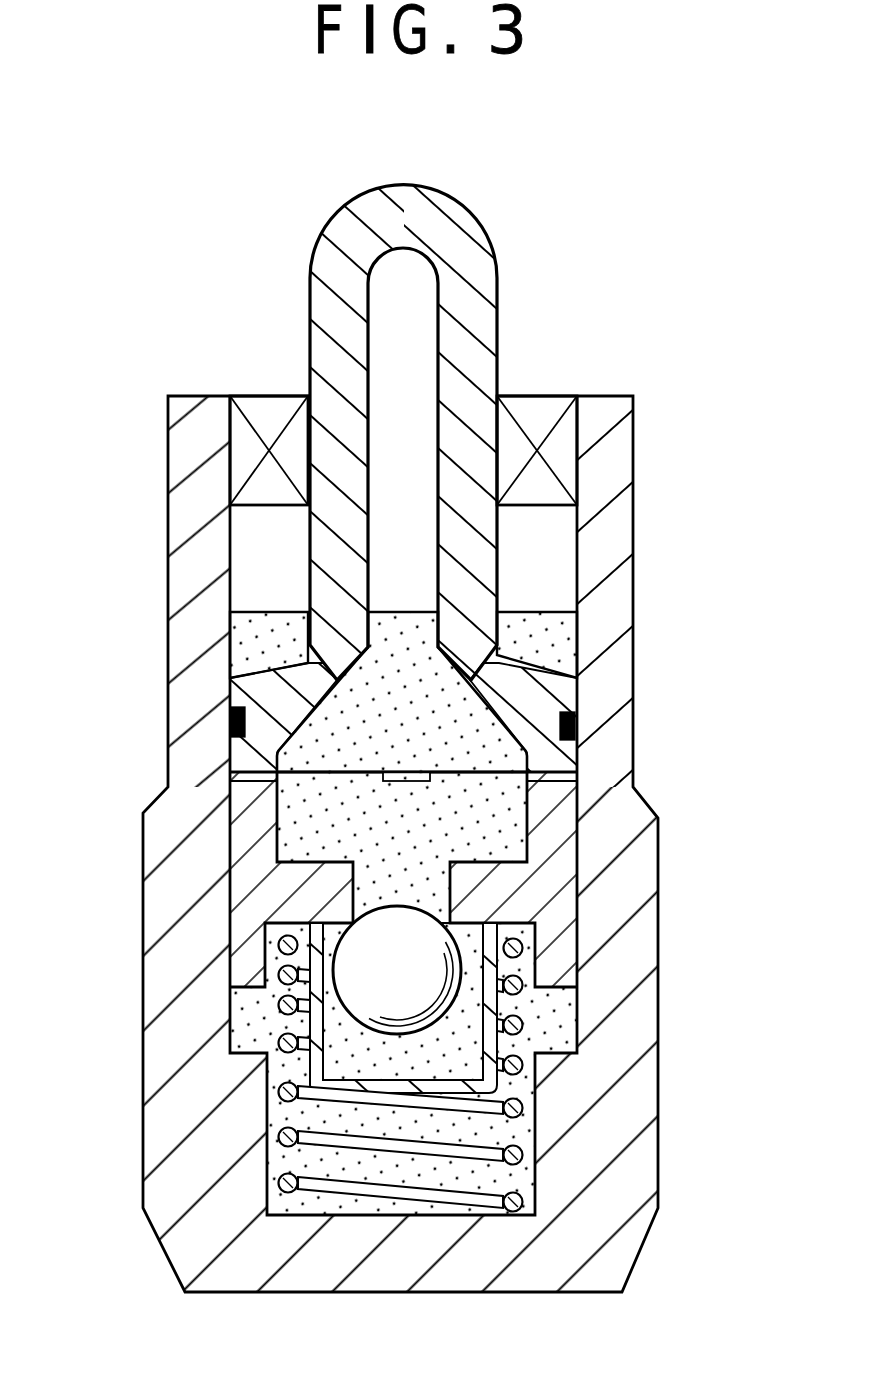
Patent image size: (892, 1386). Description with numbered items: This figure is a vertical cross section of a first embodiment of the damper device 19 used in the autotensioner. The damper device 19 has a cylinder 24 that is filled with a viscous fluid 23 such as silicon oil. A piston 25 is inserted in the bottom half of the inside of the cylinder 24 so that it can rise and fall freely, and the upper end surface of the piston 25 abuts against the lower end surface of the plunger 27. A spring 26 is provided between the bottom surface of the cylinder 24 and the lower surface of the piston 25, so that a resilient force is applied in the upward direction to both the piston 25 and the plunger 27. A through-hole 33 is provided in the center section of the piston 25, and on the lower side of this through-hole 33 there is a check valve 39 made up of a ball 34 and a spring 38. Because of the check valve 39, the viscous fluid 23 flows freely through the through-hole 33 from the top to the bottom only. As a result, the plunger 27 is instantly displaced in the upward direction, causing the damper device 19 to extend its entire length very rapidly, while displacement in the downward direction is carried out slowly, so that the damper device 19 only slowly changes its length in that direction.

The damper device 19 is at (712, 918).
The viscous fluid 23 is at (242, 652).
The cylinder 24 is at (618, 725).
The piston 25 is at (550, 837).
The spring 26 is at (525, 1015).
The plunger 27 is at (483, 273).
The through-hole 33 is at (360, 888).
The ball 34 is at (440, 945).
The spring 38 is at (277, 1078).
The check valve 39 is at (545, 1052).